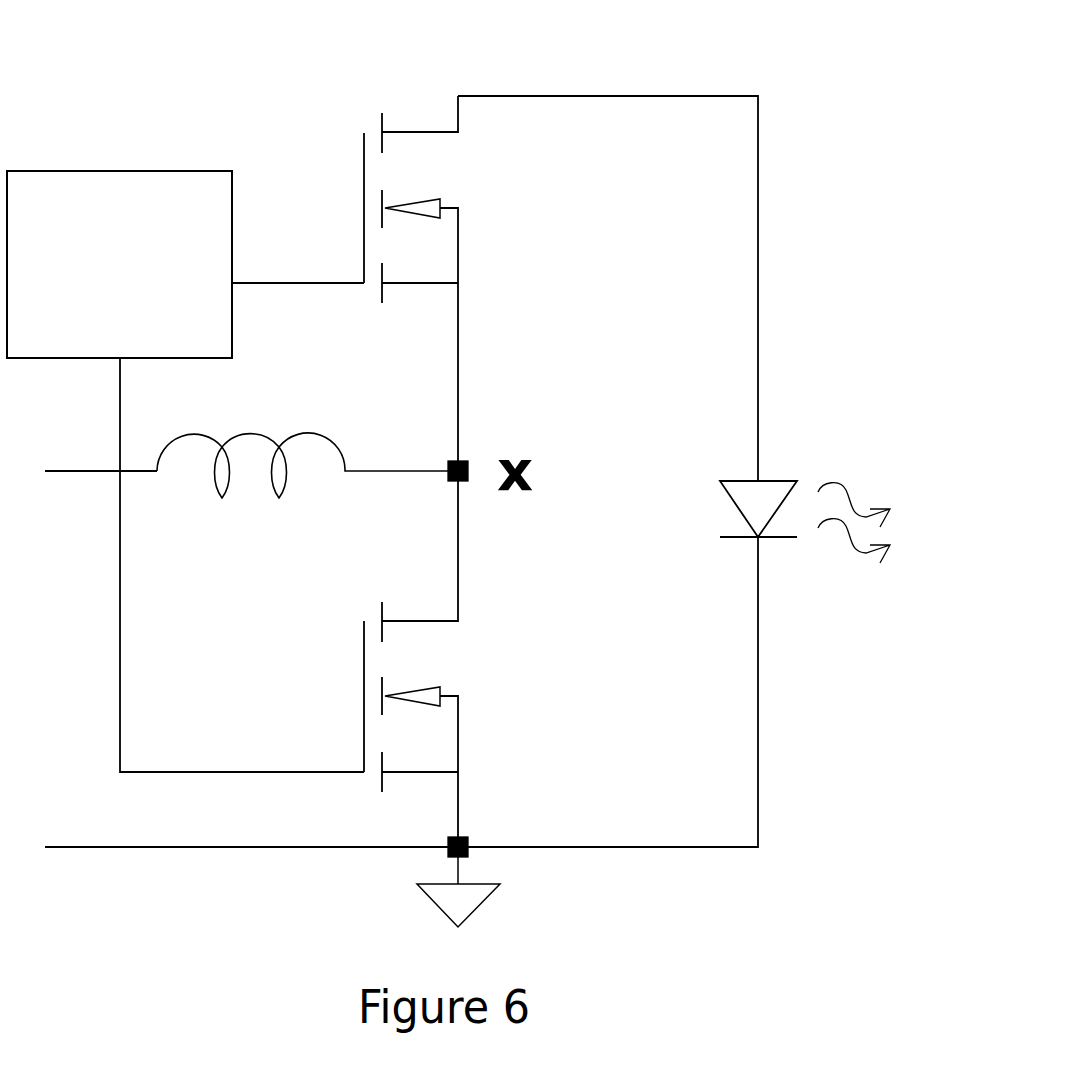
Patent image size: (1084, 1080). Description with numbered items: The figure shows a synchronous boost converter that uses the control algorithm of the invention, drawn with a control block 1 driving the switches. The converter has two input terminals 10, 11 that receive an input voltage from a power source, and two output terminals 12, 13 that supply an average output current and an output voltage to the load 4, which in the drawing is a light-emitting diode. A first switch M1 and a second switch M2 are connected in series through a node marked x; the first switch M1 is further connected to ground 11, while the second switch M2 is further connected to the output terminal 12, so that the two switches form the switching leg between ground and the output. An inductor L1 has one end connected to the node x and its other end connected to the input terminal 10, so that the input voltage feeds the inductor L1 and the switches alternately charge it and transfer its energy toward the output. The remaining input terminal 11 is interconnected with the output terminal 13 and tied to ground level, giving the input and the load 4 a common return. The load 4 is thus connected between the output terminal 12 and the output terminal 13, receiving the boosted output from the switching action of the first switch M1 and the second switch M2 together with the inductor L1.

The control unit 1 is at (119, 264).
The load 4 is at (772, 522).
The input terminal 10 is at (101, 438).
The input terminal 11 is at (251, 814).
The output terminal 12 is at (609, 255).
The output terminal 13 is at (589, 732).
The first switch M1 is at (457, 659).
The second switch M2 is at (458, 278).
The inductor L1 is at (302, 496).